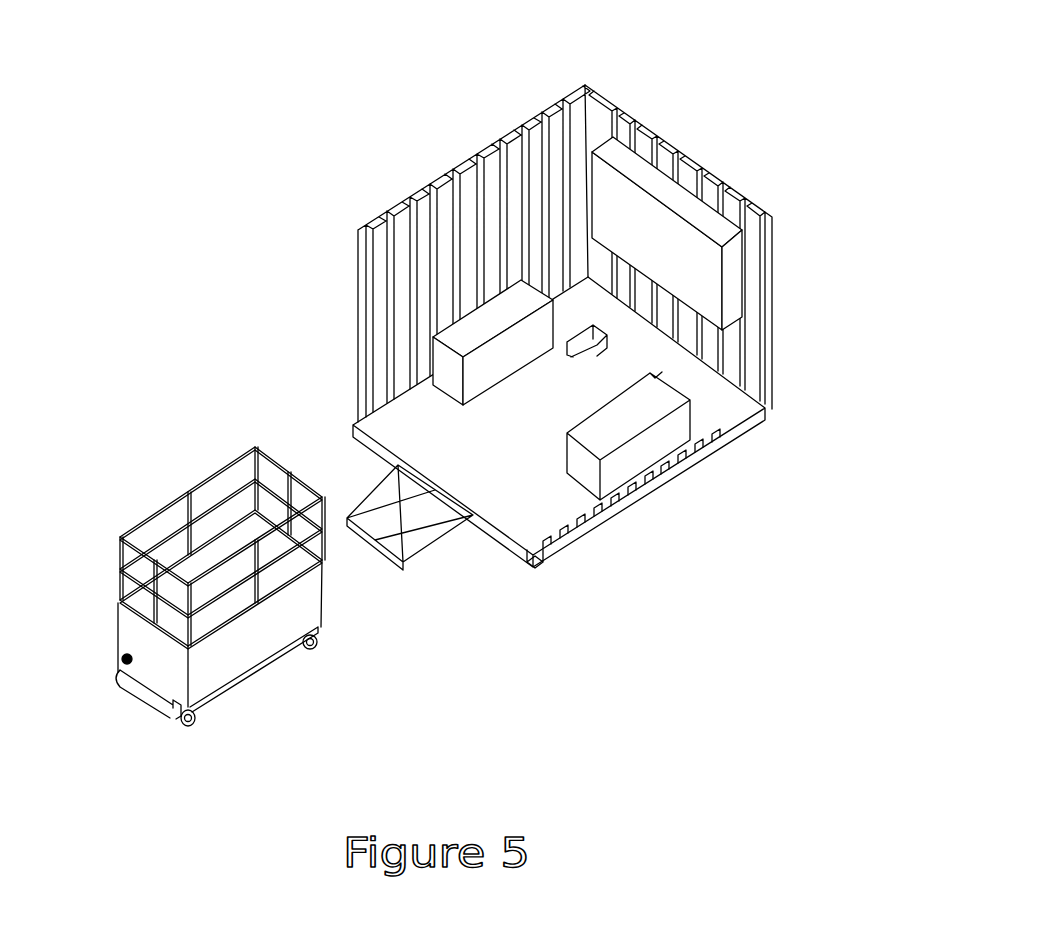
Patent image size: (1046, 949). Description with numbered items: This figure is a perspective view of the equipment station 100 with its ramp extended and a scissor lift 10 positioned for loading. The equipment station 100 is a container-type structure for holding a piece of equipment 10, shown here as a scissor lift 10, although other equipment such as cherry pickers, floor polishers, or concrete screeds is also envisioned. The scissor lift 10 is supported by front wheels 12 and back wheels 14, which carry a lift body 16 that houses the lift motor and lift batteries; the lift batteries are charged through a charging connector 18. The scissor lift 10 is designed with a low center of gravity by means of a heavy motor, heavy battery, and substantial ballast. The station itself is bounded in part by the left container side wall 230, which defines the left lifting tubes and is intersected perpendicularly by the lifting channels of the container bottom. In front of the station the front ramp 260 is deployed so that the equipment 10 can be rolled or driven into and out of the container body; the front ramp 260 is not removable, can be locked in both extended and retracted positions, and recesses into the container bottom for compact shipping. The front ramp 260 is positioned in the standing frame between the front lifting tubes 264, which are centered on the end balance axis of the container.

The equipment station 100 is at (657, 72).
The left container side wall 230 is at (423, 193).
The front ramp 260 is at (428, 547).
The front lifting tubes 264 is at (480, 530).
The scissor lift 10 is at (188, 478).
The front wheels 12 is at (318, 650).
The back wheels 14 is at (193, 732).
The lift body 16 is at (257, 682).
The charging connector 18 is at (127, 655).